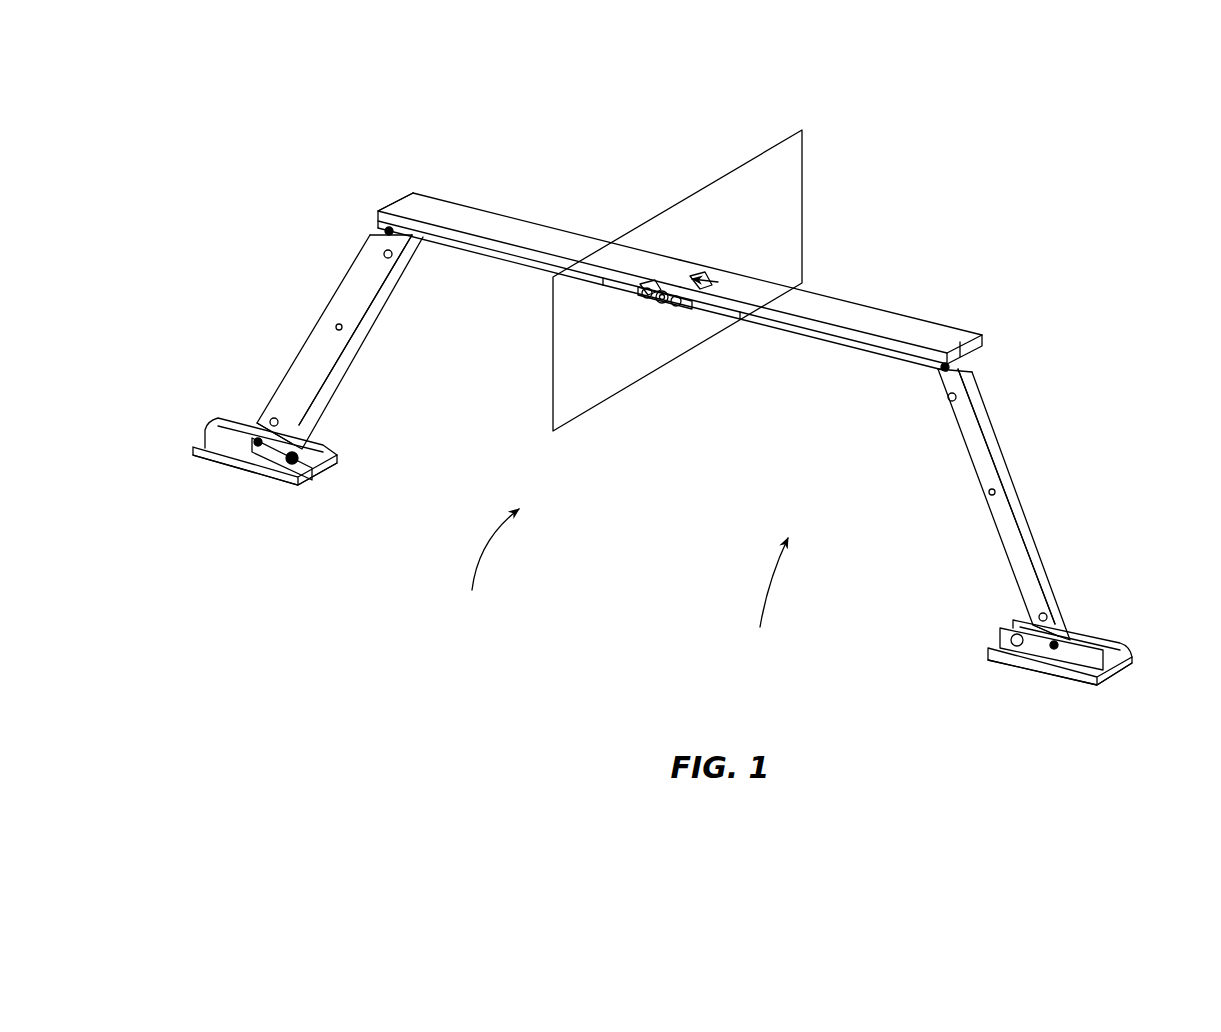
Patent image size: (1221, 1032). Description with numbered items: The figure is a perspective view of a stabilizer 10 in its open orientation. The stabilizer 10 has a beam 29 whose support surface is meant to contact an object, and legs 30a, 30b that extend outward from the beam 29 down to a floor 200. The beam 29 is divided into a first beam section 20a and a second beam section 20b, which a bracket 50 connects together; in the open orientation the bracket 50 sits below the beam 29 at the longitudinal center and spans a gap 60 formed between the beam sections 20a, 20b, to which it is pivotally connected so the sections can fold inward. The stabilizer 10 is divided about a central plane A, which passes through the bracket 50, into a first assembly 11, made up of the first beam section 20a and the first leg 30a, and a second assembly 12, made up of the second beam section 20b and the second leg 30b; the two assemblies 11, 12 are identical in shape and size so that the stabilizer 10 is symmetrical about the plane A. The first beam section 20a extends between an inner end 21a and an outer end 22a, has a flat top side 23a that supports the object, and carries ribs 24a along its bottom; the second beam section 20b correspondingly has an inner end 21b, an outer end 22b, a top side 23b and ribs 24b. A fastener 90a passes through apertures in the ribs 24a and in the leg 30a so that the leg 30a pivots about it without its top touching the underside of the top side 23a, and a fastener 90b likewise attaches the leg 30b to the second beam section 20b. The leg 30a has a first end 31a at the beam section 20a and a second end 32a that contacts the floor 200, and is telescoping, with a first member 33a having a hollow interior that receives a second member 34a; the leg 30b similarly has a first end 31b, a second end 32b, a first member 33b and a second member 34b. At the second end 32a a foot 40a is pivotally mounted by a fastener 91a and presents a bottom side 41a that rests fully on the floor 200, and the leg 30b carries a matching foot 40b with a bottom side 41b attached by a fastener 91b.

The stabilizer 10 is at (668, 408).
The first assembly 11 is at (490, 563).
The second assembly 12 is at (768, 598).
The floor 200 is at (629, 600).
The central plane A is at (803, 148).
The first beam section 20a is at (486, 227).
The second beam section 20b is at (845, 318).
The inner end 21a is at (697, 263).
The second rail inner end 21b is at (658, 284).
The outer end 22a is at (398, 198).
The second rail outer end 22b is at (985, 347).
The top side 23a is at (555, 240).
The second rail top surface 23b is at (832, 312).
The ribs 24a is at (527, 268).
The second rail lower flange 24b is at (793, 332).
The beam 29 is at (808, 307).
The first leg 30a is at (300, 339).
The second leg 30b is at (1046, 504).
The first end 31a is at (390, 235).
The second leg upper end 31b is at (942, 377).
The second end 32a is at (262, 432).
The second leg lower end 32b is at (1077, 637).
The first member 33a is at (358, 327).
The second leg side face 33b is at (1023, 515).
The second member 34a is at (280, 440).
The second lower pivot 34b is at (1070, 633).
The foot 40a is at (258, 472).
The second base 40b is at (1073, 645).
The bottom side 41a is at (273, 478).
The second base plate 41b is at (1070, 683).
The bracket 50 is at (681, 293).
The gap 60 is at (718, 282).
The fastener 90a is at (385, 227).
The second upper pivot fastener 90b is at (938, 372).
The fastener 91a is at (260, 452).
The second base bracket 91b is at (1058, 645).